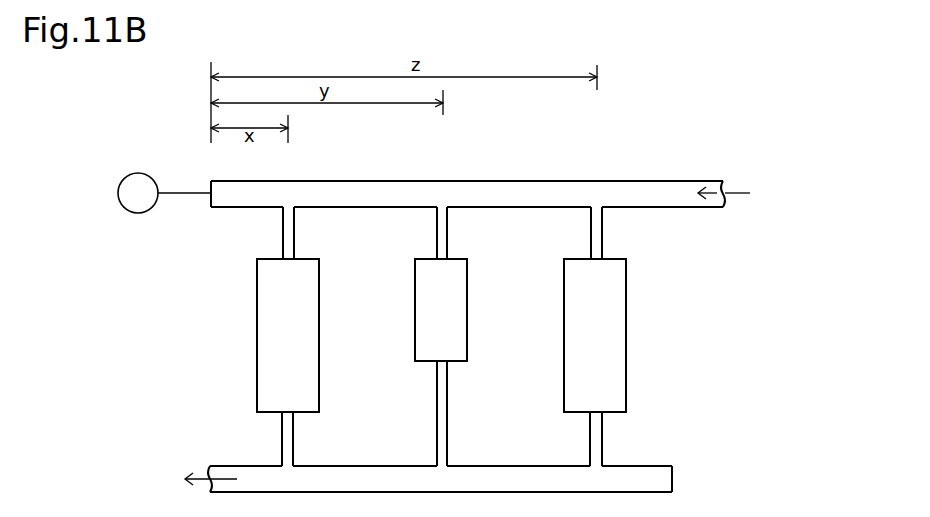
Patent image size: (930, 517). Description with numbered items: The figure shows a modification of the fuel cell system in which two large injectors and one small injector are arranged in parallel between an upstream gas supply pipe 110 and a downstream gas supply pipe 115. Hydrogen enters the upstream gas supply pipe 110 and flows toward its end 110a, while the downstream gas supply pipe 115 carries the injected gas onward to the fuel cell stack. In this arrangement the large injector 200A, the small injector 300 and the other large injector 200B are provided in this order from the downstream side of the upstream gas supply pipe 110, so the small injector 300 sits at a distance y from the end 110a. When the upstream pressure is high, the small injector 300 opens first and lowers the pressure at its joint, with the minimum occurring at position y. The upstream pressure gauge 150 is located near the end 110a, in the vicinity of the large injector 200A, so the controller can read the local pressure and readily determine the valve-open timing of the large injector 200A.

The upstream gas supply pipe 110 is at (350, 180).
The end of the upstream gas supply pipe 110a is at (210, 182).
The upstream pressure gauge 150 is at (150, 208).
The large injector 200A is at (305, 259).
The small injector 300 is at (460, 259).
The large injector 200B is at (616, 259).
The downstream gas supply pipe 115 is at (360, 466).